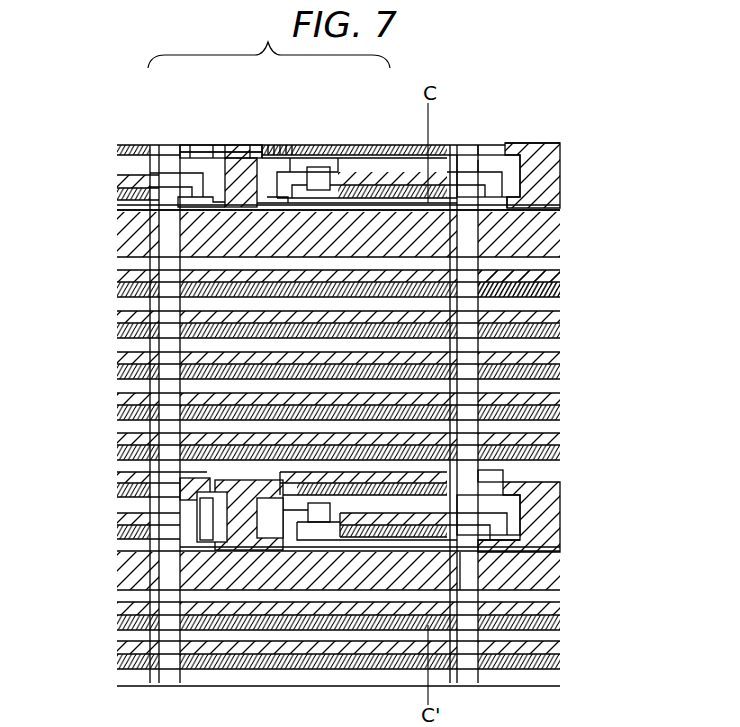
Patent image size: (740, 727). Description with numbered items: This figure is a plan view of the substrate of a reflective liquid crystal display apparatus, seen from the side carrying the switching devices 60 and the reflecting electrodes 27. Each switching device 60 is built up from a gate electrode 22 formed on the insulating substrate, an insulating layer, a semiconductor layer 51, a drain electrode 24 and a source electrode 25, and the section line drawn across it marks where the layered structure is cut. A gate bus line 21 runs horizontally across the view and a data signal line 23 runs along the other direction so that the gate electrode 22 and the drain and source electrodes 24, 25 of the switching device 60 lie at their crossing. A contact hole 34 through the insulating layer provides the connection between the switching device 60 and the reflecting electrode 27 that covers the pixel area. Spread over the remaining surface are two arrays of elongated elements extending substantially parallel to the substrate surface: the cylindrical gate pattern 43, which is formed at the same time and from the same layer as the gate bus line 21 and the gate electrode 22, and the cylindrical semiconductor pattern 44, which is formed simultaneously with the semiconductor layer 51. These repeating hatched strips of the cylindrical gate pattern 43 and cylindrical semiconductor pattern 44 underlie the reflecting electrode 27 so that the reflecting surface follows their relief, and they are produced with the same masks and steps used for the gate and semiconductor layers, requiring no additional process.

The switching device 60 is at (310, 110).
The drain electrode 24 is at (188, 156).
The gate electrode 22 is at (233, 155).
The semiconductor layer 51 is at (256, 155).
The source electrode 25 is at (295, 152).
The contact hole 34 is at (327, 167).
The data signal line 23 is at (133, 184).
The gate bus line 21 is at (173, 247).
The reflecting electrode 27 is at (122, 273).
The cylindrical gate pattern 43 is at (557, 278).
The cylindrical semiconductor pattern 44 is at (557, 289).